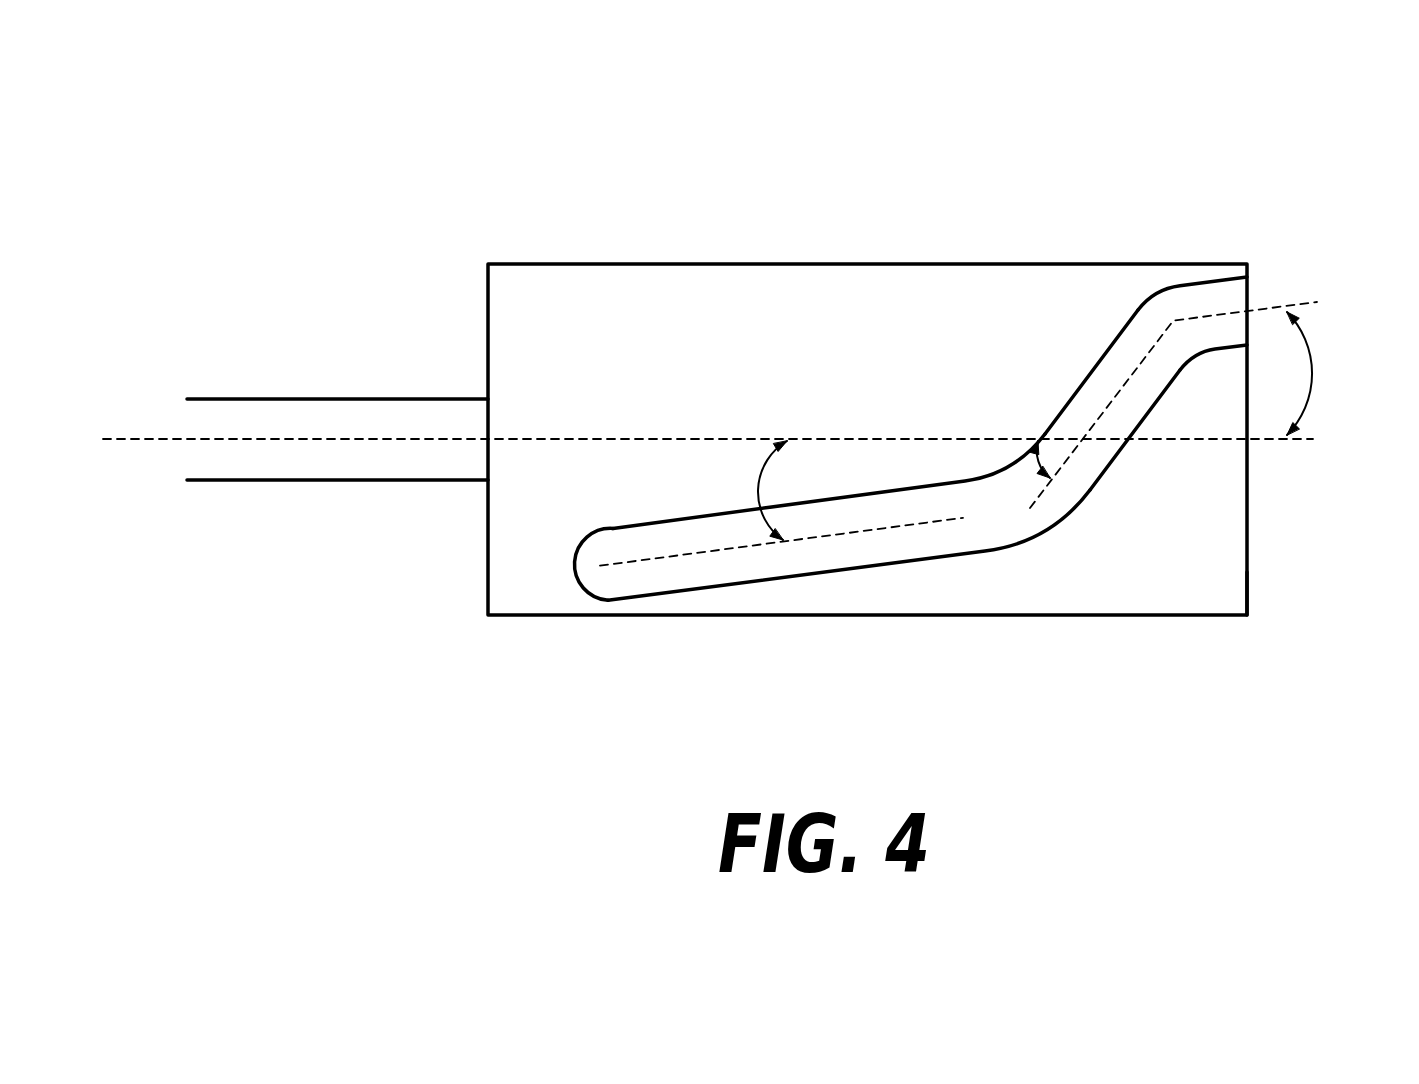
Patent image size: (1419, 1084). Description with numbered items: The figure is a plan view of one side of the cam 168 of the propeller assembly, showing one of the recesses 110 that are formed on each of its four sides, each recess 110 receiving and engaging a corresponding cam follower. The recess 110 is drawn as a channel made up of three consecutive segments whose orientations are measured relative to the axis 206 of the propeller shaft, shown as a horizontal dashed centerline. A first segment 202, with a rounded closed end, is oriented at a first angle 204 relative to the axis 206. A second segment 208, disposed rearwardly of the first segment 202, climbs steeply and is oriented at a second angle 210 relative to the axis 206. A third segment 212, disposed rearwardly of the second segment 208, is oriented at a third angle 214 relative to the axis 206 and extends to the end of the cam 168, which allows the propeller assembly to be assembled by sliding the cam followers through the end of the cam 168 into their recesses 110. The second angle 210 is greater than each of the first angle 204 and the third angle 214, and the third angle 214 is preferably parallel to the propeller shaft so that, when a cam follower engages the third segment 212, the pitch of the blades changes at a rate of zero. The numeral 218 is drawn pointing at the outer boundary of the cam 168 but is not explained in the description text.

The recess 110 is at (912, 577).
The cam 168 is at (575, 631).
The first segment 202 is at (653, 523).
The first angle 204 is at (755, 485).
The axis 206 is at (117, 438).
The second segment 208 is at (1090, 490).
The second angle 210 is at (1037, 462).
The third segment 212 is at (1173, 287).
The third angle 214 is at (1312, 370).
The enclosure wall 218 is at (1247, 572).